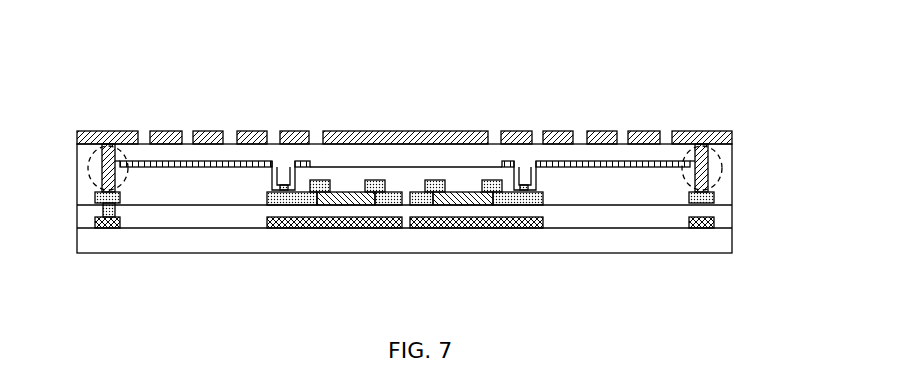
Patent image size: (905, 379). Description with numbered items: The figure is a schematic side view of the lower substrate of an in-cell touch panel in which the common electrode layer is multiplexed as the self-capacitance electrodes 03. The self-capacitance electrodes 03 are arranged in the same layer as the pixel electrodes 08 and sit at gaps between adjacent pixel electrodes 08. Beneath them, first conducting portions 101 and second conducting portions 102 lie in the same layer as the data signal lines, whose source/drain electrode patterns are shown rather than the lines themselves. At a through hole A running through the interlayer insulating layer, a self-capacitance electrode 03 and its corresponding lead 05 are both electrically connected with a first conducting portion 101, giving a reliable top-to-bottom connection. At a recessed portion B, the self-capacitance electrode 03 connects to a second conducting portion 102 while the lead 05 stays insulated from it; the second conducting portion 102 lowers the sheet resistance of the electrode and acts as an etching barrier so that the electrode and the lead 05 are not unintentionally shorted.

The self-capacitance electrode 03 is at (112, 143).
The pixel electrode 08 is at (193, 168).
The first conducting portion 101 is at (118, 200).
The second conducting portion 102 is at (715, 195).
The lead 05 is at (113, 226).
The through hole A is at (90, 162).
The recessed portion B is at (712, 163).